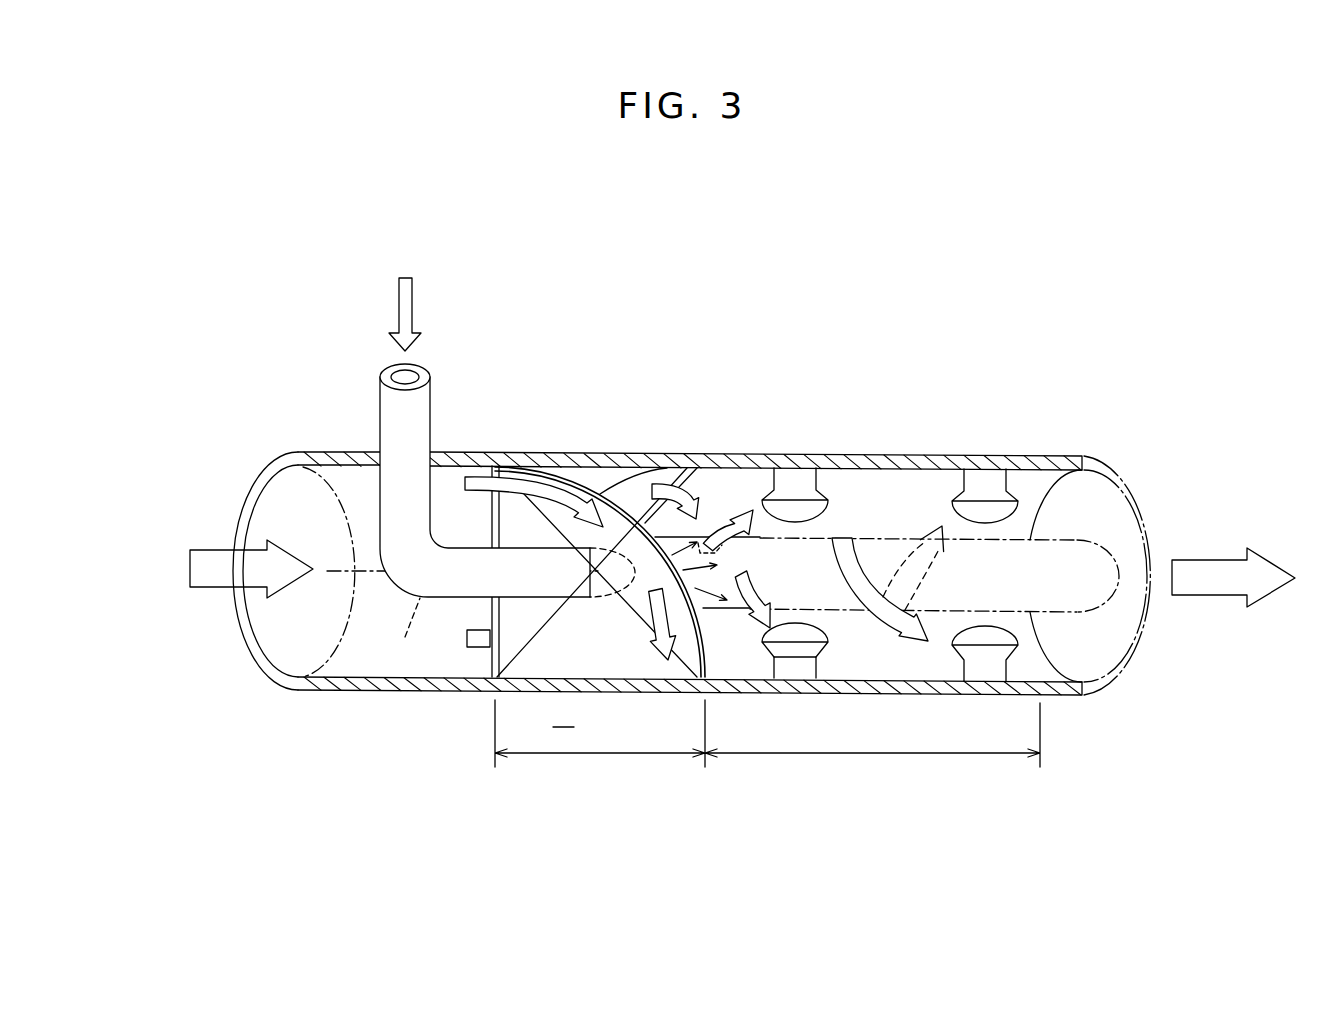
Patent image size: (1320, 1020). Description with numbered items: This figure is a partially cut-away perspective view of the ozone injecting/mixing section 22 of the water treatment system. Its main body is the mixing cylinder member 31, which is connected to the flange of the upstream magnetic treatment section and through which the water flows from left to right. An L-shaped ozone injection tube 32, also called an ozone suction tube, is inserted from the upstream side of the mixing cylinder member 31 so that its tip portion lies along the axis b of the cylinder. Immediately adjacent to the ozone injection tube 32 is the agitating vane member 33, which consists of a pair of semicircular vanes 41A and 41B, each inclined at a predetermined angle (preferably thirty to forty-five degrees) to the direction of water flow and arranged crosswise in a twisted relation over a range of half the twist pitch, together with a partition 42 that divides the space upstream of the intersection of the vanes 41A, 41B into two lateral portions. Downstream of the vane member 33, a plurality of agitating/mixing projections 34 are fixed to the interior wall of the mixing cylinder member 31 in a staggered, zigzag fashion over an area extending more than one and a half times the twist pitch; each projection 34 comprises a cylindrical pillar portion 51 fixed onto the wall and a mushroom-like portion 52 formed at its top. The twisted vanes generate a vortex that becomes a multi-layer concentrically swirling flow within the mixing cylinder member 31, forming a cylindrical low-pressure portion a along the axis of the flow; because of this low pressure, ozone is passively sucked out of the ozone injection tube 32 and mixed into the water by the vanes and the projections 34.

The ozone injecting/mixing section 22 is at (730, 402).
The mixing cylinder member 31 is at (823, 453).
The L-shaped ozone injection tube 32 is at (432, 400).
The agitating vane member 33 is at (467, 665).
The agitating/mixing projections 34 is at (1022, 485).
The semicircular vane 41A is at (622, 527).
The semicircular vane 41B is at (668, 475).
The partition 42 is at (506, 524).
The cylindrical portion 51 is at (808, 670).
The mushroom-like portion 52 is at (815, 637).
The cylindrical low-pressure portion a is at (1045, 612).
The axis of the mixing cylinder member b is at (405, 637).